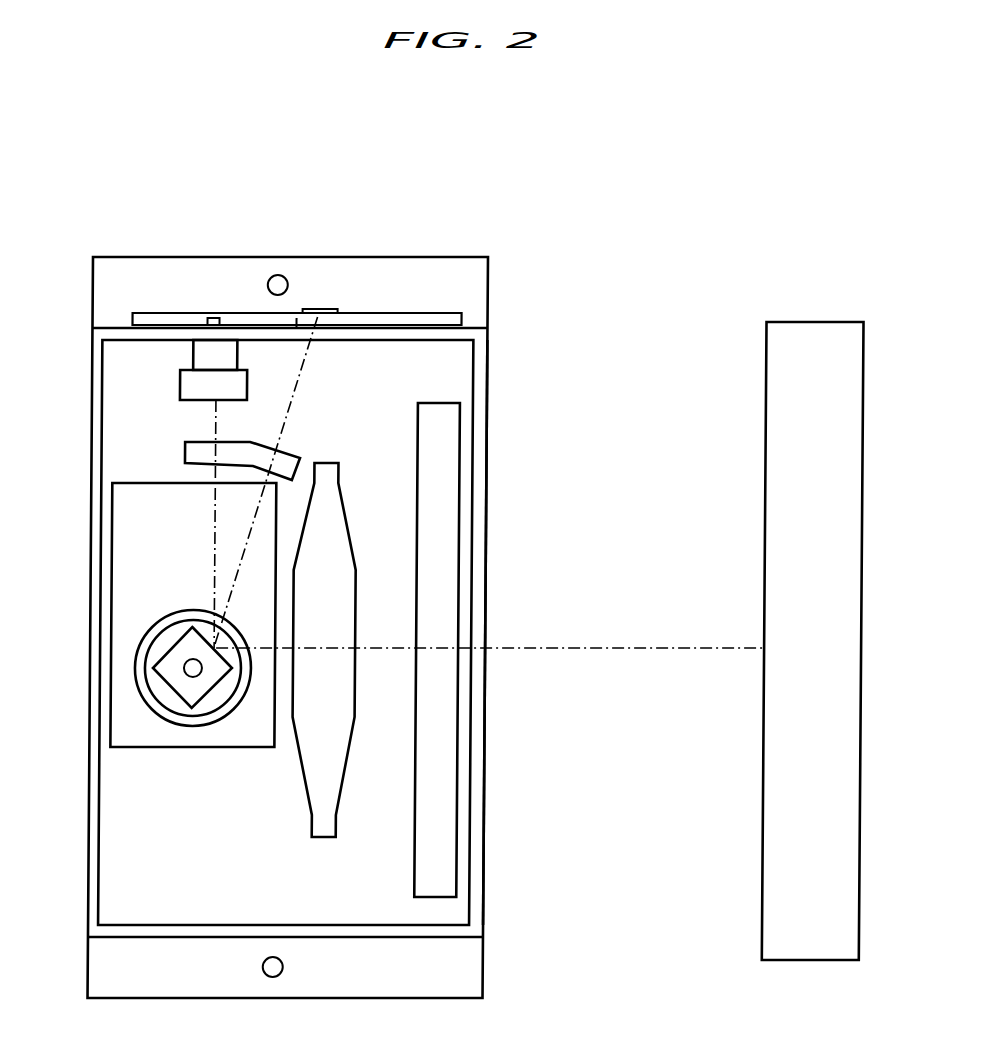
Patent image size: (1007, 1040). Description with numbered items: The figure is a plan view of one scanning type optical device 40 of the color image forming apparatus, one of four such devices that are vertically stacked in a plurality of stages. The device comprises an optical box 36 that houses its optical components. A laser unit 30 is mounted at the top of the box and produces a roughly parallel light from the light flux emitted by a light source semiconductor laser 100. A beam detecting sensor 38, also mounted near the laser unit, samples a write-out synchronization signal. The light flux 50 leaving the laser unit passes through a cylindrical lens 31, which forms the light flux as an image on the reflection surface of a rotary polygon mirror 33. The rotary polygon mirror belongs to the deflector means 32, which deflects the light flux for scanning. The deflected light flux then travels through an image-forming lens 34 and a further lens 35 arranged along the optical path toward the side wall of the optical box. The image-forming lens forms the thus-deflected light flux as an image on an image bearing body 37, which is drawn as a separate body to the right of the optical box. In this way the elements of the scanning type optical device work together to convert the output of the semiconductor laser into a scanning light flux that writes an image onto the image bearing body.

The light source semiconductor laser 100 is at (214, 320).
The laser unit 30 is at (148, 313).
The beam detecting sensor 38 is at (320, 312).
The scanning type optical device 40 is at (725, 328).
The cylindrical lens 31 is at (292, 468).
The deflector means 32 is at (172, 697).
The rotary polygon mirror 33 is at (197, 692).
The image-forming lens 34 is at (350, 537).
The lens 35 is at (452, 825).
The optical box 36 is at (483, 912).
The image bearing body 37 is at (775, 962).
The light flux 50 is at (597, 650).